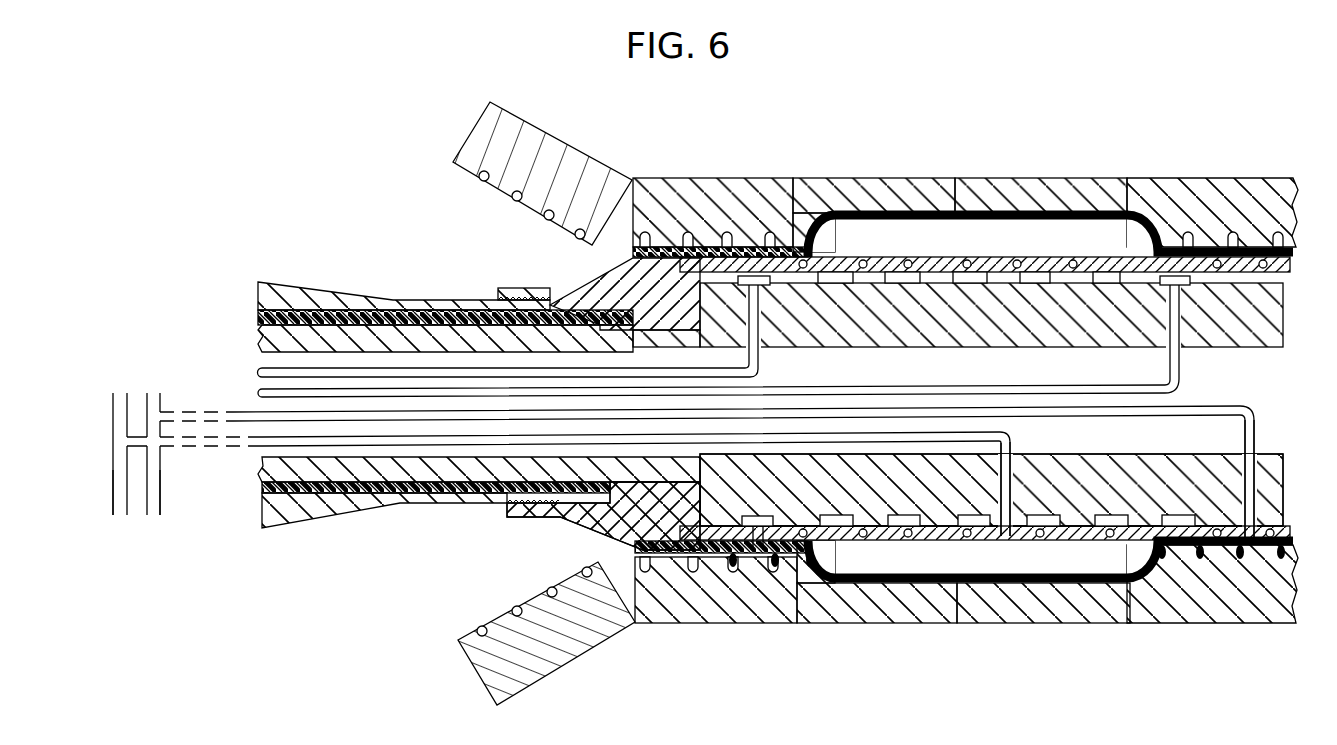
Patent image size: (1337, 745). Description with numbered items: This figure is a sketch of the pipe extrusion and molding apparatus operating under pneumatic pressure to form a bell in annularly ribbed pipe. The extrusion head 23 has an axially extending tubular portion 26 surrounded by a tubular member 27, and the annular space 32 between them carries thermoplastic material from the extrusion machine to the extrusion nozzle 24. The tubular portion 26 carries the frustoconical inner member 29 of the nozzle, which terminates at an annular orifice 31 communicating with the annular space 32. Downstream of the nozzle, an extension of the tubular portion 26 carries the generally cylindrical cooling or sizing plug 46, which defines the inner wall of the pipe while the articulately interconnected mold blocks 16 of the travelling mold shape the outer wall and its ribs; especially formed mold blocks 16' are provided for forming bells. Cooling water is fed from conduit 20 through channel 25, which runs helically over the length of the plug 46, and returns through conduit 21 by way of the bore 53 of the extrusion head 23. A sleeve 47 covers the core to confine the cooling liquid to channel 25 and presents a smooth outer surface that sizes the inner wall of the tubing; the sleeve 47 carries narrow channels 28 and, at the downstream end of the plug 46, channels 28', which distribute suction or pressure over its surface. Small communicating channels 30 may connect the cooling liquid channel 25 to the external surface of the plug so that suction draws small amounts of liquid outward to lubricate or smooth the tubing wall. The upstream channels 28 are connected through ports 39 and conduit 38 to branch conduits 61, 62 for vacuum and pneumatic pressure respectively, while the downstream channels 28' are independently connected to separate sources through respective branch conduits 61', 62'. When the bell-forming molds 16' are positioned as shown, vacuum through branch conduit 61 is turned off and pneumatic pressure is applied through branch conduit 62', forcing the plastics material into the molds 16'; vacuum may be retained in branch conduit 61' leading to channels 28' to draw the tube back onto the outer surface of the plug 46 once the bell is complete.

The mold blocks 16 is at (515, 420).
The bell-forming mold blocks 16' is at (978, 387).
The conduit 20 is at (562, 370).
The return conduit 21 is at (1093, 257).
The extrusion head 23 is at (298, 287).
The extrusion nozzle 24 is at (683, 540).
The cooling channel 25 is at (1037, 275).
The tubular portion 26 is at (403, 340).
The tubular member 27 is at (453, 500).
The suction or pressure channel 28 is at (710, 581).
The downstream suction or pressure channels 28' is at (1050, 396).
The inner member of extrusion nozzle 29 is at (620, 265).
The communicating channels 30 is at (753, 527).
The annular orifice 31 is at (672, 240).
The annular space 32 is at (477, 317).
The suction/pressure conduit 38 is at (800, 436).
The suction or pressure port 39 is at (1015, 448).
The sizing plug 46 is at (962, 307).
The sleeve 47 is at (1110, 530).
The core bore 53 is at (262, 325).
The vacuum branch conduit 61 is at (98, 443).
The downstream vacuum branch conduit 61' is at (168, 443).
The pressure branch conduit 62 is at (94, 495).
The downstream pressure branch conduit 62' is at (185, 495).